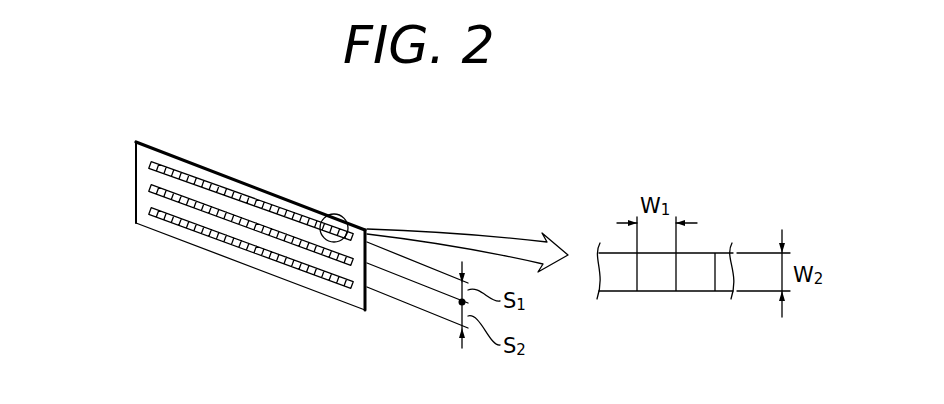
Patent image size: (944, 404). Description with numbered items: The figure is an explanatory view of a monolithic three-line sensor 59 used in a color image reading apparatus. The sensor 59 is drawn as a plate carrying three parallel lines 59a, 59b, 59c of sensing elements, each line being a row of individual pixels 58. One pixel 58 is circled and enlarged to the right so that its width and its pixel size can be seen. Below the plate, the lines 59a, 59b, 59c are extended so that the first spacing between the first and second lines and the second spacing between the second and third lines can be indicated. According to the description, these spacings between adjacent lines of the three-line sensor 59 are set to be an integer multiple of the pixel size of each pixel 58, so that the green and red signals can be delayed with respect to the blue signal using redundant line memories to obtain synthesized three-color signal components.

The 3-line sensor 59 is at (136, 170).
The first strip of apertures 59a is at (176, 171).
The second strip of apertures 59b is at (241, 212).
The third strip of apertures 59c is at (211, 233).
The pixel 58 is at (347, 221).